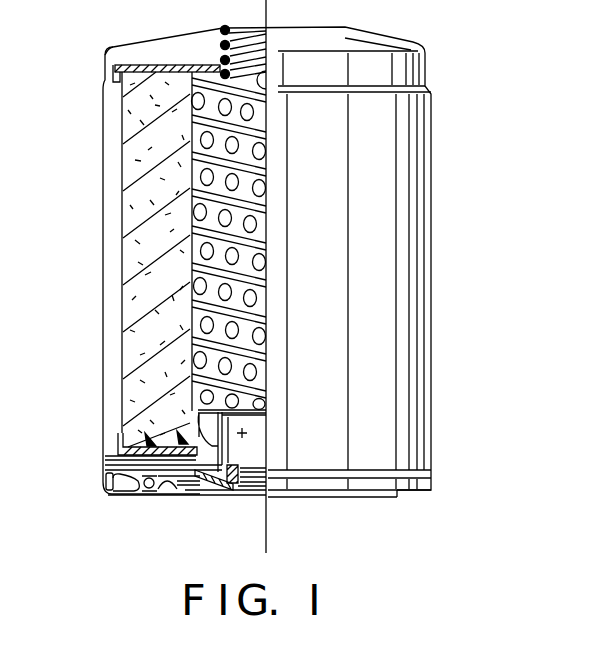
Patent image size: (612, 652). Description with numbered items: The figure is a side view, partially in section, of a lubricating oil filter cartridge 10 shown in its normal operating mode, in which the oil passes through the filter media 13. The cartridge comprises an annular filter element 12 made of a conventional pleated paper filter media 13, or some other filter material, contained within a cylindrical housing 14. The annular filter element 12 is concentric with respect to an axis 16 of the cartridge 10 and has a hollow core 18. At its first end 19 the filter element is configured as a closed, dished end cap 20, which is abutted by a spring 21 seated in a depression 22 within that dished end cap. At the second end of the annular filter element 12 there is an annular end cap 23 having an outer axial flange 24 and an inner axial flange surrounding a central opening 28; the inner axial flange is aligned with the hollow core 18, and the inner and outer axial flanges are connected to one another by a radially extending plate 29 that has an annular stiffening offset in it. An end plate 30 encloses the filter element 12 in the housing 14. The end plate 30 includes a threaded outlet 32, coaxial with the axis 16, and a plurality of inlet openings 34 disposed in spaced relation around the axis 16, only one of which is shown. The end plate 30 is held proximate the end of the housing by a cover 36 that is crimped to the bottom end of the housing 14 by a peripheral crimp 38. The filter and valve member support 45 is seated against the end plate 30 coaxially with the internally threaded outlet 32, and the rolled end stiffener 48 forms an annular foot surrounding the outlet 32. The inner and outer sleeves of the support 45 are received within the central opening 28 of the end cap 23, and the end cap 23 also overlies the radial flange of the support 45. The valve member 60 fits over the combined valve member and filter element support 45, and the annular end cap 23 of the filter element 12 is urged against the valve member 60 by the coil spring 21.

The lubricating oil filter cartridge 10 is at (405, 28).
The annular filter element 12 is at (150, 130).
The pleated paper filter media 13 is at (125, 264).
The cylindrical housing 14 is at (102, 204).
The axis 16 is at (270, 505).
The hollow core 18 is at (190, 301).
The first end 19 is at (116, 72).
The closed, dished end cap 20 is at (105, 52).
The spring 21 is at (221, 44).
The depression 22 is at (266, 87).
The annular end cap 23 is at (119, 448).
The outer axial flange 24 is at (106, 457).
The central opening 28 is at (147, 435).
The radially extending plate 29 is at (179, 433).
The end plate 30 is at (150, 494).
The threaded outlet 32 is at (252, 460).
The inlet openings 34 is at (203, 492).
The cover 36 is at (118, 492).
The peripheral crimp 38 is at (108, 477).
The filter and valve member support 45 is at (262, 420).
The rolled end stiffener 48 is at (240, 498).
The valve member 60 is at (252, 442).